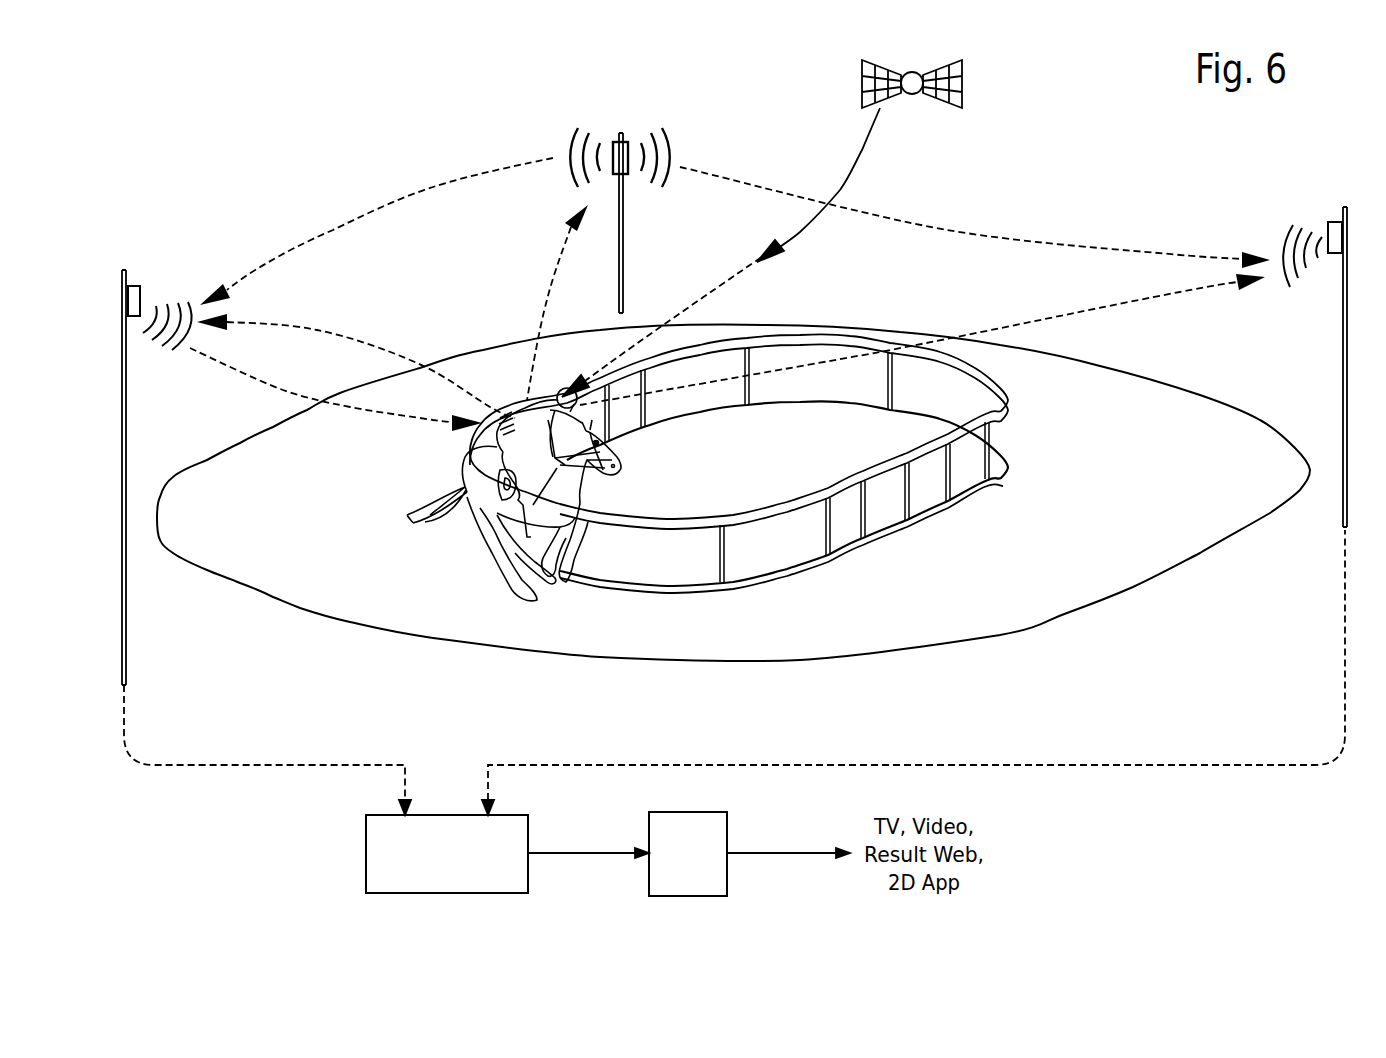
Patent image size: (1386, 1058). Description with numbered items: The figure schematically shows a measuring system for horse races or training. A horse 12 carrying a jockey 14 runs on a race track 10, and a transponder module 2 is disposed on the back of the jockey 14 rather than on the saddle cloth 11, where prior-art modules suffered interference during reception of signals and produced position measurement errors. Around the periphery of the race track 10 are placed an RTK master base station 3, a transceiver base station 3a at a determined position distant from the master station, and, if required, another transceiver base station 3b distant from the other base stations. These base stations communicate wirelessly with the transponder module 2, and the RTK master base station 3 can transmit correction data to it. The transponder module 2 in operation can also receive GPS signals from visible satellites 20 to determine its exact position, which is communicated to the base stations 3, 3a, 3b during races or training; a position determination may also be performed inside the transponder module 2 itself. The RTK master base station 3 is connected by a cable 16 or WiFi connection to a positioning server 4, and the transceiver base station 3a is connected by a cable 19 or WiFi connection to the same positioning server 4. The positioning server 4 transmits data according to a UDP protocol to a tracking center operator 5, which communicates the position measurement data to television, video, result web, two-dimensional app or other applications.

The transponder module 2 is at (527, 417).
The RTK master base station 3 is at (127, 608).
The transceiver base station 3a is at (1343, 382).
The transceiver base station 3b is at (623, 250).
The positioning server 4 is at (505, 893).
The tracking center operator 5 is at (687, 896).
The race track 10 is at (1021, 606).
The saddle cloth 11 is at (497, 487).
The horse 12 is at (605, 447).
The jockey 14 is at (527, 453).
The cable 16 is at (286, 768).
The cable 19 is at (568, 768).
The satellites 20 is at (918, 72).